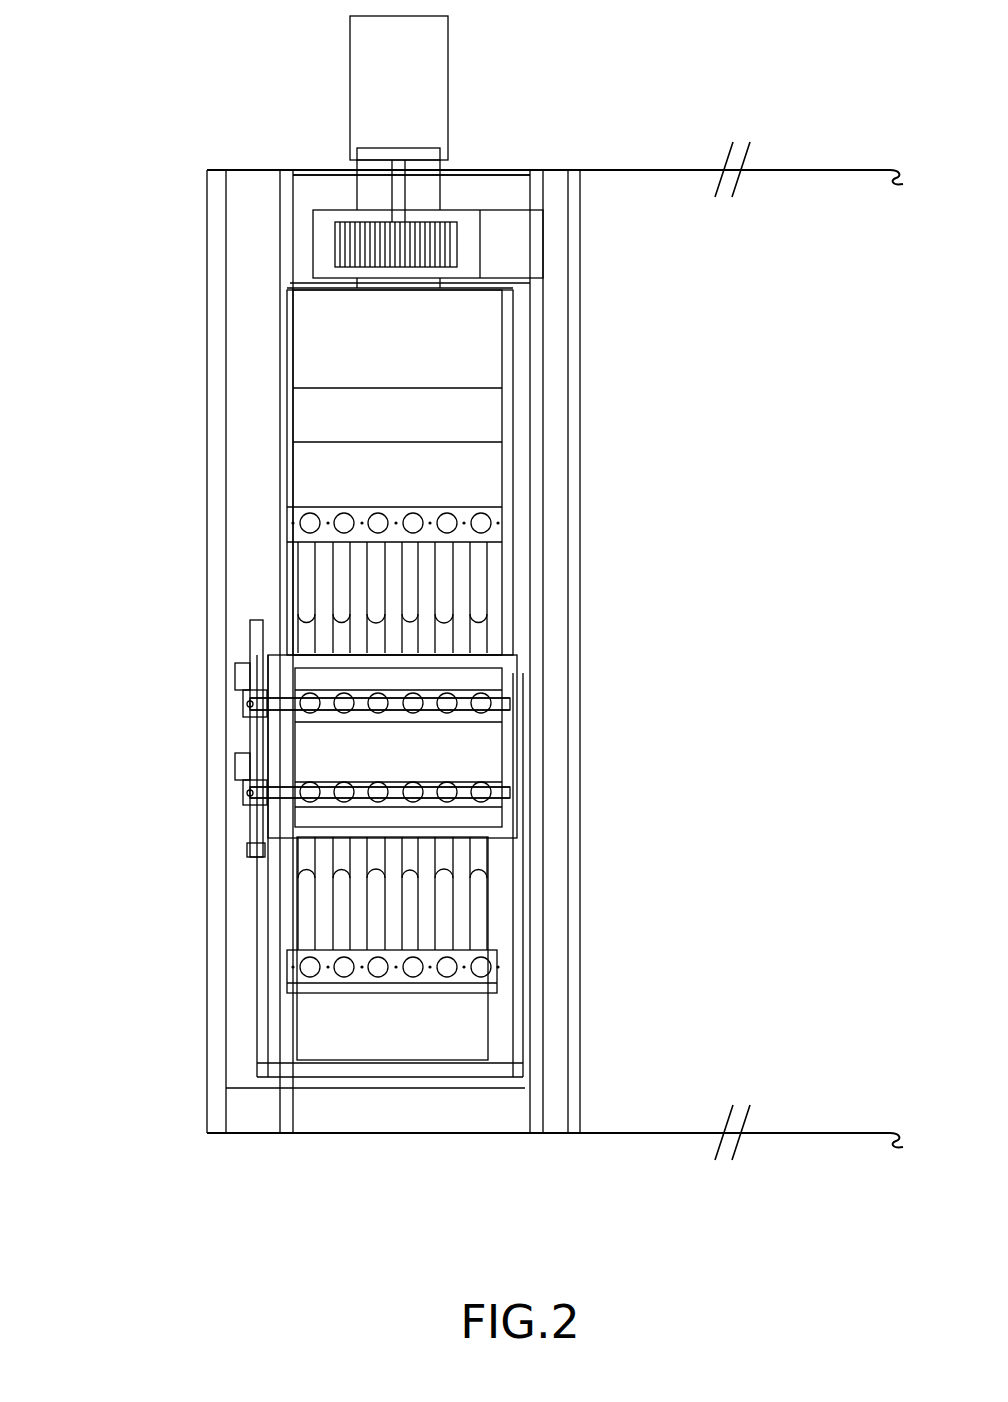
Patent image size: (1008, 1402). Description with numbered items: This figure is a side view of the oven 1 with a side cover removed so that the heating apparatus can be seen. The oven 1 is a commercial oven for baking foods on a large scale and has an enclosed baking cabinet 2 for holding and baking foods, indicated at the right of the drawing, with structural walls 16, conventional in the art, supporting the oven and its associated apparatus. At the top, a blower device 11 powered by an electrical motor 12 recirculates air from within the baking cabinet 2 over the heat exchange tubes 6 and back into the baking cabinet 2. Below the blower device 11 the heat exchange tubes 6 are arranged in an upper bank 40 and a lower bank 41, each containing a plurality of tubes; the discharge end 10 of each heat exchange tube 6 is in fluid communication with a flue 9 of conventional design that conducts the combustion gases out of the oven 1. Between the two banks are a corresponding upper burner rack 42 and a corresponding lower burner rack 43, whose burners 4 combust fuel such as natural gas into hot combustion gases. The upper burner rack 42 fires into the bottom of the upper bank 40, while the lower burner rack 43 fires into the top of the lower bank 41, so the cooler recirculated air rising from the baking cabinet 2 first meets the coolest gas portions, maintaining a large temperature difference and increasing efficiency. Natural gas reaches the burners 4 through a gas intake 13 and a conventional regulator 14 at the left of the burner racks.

The oven 1 is at (306, 150).
The baking cabinet 2 is at (662, 150).
The burners 4 is at (380, 714).
The heat exchange tubes 6 is at (308, 592).
The flue 9 is at (480, 182).
The discharge end 10 is at (448, 520).
The blower device 11 is at (325, 246).
The electrical motor 12 is at (425, 92).
The gas intake 13 is at (250, 634).
The regulator 14 is at (243, 708).
The structural walls 16 is at (287, 430).
The upper bank 40 is at (498, 597).
The lower bank 41 is at (478, 912).
The upper burner rack 42 is at (468, 692).
The lower burner rack 43 is at (496, 785).